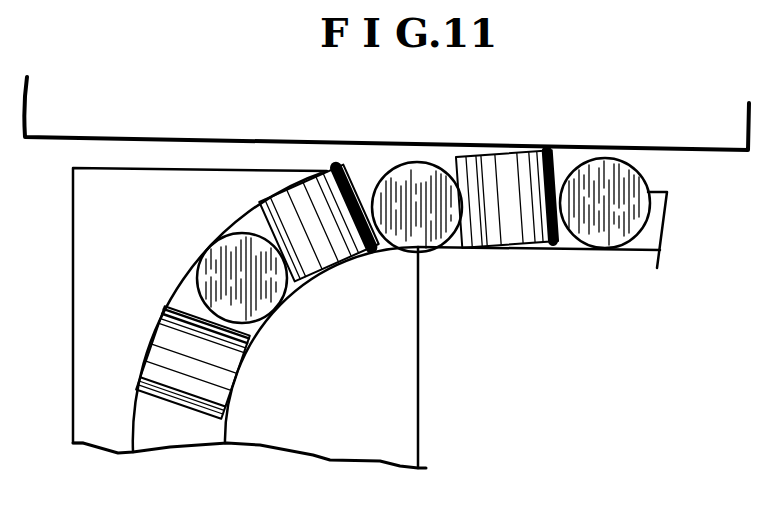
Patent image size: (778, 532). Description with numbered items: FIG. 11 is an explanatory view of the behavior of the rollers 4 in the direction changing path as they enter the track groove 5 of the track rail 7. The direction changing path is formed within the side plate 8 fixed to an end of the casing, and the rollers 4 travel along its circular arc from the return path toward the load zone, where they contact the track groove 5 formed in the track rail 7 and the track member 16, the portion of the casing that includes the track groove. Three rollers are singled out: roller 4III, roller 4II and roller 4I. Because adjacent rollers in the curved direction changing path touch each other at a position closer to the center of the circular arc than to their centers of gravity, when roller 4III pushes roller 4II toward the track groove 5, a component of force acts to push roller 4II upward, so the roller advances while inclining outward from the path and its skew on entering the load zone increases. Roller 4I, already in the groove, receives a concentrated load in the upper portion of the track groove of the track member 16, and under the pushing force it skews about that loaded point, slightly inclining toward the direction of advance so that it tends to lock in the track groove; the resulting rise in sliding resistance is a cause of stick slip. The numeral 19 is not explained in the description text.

The track rail 7 is at (228, 87).
The side plate 8 is at (325, 422).
The base surface 19 is at (178, 433).
The track member 16 is at (553, 359).
The track groove 5 is at (657, 212).
The roller 4 is at (273, 300).
The roller 4I is at (512, 182).
The roller 4II is at (433, 173).
The roller 4III is at (327, 205).